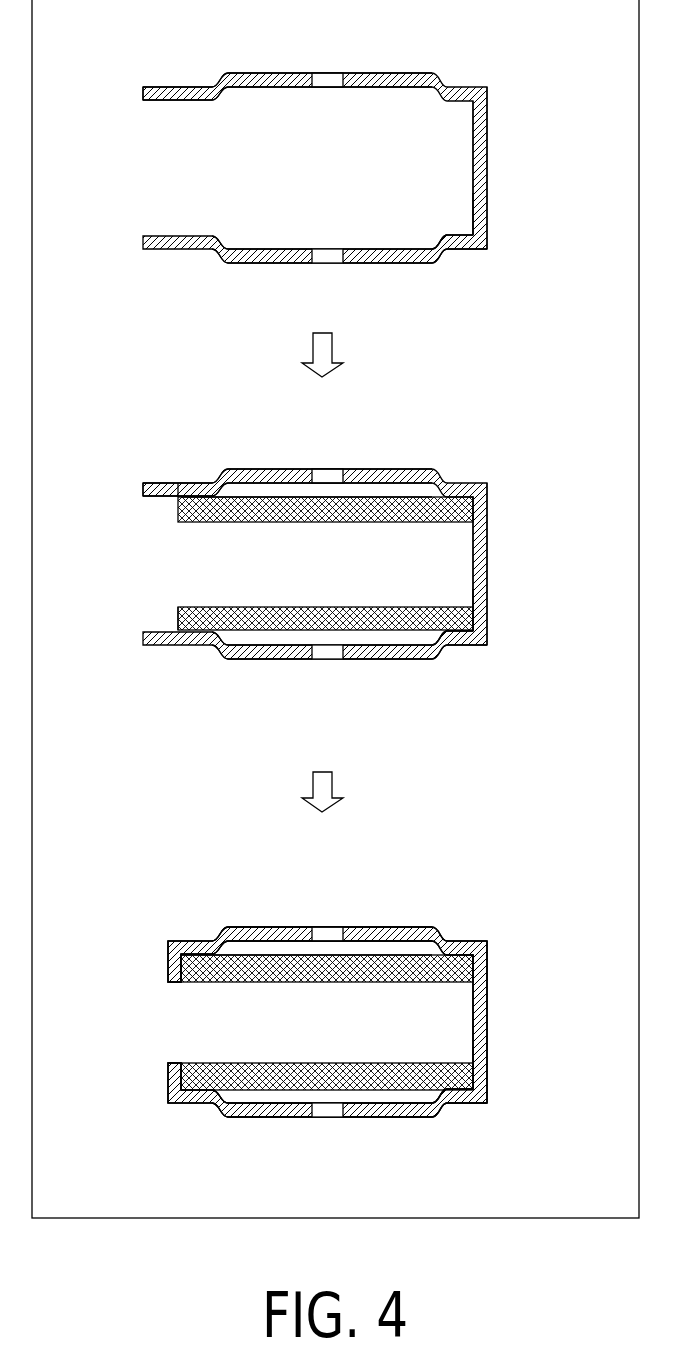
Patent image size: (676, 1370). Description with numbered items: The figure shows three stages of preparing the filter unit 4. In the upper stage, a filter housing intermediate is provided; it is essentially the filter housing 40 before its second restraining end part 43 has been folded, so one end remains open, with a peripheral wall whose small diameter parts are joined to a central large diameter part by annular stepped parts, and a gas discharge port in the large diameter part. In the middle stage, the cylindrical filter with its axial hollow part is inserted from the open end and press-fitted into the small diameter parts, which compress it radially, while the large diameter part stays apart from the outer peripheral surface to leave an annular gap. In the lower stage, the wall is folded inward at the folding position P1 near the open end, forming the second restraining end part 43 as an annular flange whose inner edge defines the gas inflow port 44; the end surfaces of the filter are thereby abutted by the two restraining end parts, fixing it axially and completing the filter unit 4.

The filter unit 4 is at (474, 905).
The filter housing 40 is at (270, 913).
The second restraining end part 43 is at (168, 962).
The gas inflow port 44 is at (173, 1018).
The folding position P1 is at (181, 485).